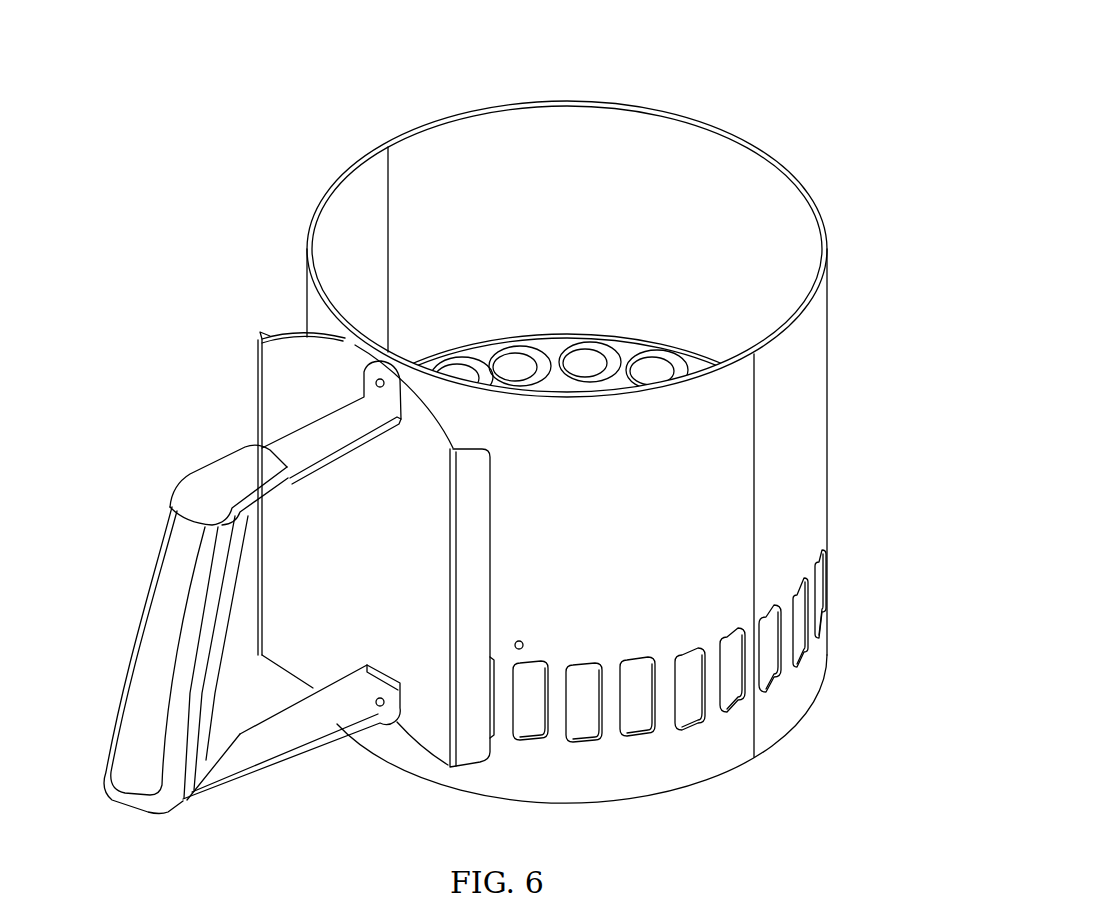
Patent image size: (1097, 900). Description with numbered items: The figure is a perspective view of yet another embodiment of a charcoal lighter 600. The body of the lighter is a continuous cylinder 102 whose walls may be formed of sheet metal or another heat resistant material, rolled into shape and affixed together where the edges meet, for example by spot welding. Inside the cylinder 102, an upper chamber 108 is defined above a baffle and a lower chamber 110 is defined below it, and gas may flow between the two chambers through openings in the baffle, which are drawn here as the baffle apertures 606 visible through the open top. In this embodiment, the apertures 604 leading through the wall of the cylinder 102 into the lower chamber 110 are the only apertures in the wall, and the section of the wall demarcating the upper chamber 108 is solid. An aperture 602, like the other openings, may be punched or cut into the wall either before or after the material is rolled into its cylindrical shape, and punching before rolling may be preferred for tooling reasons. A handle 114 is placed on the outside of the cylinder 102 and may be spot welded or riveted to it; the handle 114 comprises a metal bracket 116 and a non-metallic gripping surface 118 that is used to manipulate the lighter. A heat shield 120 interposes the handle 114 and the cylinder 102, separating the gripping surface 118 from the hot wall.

The charcoal lighter 600 is at (730, 60).
The cylinder 102 is at (595, 100).
The upper chamber 108 is at (460, 142).
The lower chamber 110 is at (712, 815).
The handle 114 is at (276, 768).
The metal bracket 116 is at (340, 412).
The non-metallic gripping surface 118 is at (172, 545).
The heat shield 120 is at (268, 412).
The aperture 602 is at (828, 568).
The apertures 604 is at (633, 743).
The grate aperture 606 is at (473, 358).